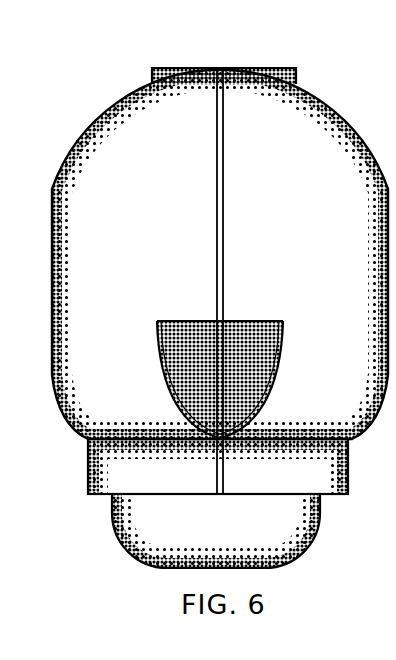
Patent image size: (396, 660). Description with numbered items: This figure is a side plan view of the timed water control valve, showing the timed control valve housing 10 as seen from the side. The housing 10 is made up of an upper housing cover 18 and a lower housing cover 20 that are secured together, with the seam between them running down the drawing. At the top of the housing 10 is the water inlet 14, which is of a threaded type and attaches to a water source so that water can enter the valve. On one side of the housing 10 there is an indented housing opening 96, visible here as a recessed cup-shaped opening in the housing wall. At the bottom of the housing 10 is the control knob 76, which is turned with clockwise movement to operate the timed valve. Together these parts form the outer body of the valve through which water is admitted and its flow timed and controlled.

The timed control valve housing 10 is at (103, 69).
The water inlet 14 is at (284, 70).
The upper housing cover 18 is at (150, 209).
The lower housing cover 20 is at (270, 210).
The indented housing opening 96 is at (177, 349).
The control knob 76 is at (265, 537).